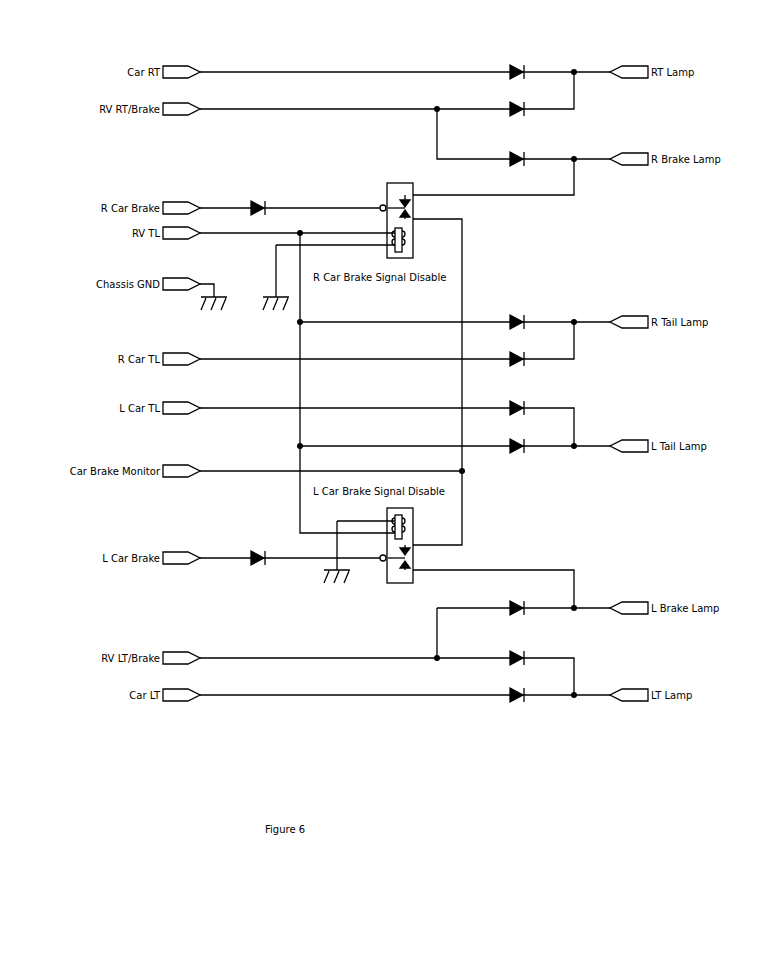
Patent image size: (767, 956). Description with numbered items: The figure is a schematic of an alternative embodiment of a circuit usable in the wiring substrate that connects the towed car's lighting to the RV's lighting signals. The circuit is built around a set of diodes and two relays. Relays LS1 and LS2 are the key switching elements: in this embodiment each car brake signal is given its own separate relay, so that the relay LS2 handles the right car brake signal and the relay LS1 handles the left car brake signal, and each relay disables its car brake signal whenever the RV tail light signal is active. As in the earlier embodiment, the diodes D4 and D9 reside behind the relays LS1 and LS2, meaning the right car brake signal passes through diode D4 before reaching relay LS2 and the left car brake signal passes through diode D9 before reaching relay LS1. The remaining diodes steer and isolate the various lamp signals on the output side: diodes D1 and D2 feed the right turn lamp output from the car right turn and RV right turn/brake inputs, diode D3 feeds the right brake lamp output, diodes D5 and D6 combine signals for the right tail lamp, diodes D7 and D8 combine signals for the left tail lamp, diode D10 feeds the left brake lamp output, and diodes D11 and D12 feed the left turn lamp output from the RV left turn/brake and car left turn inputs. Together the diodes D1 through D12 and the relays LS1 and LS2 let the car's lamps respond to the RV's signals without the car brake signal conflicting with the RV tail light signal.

The diode D1 is at (518, 64).
The diode D2 is at (518, 101).
The diode D3 is at (518, 151).
The diode D4 is at (258, 200).
The diode D5 is at (518, 314).
The diode D6 is at (518, 351).
The diode D7 is at (518, 400).
The diode D8 is at (518, 438).
The diode D9 is at (258, 550).
The diode D10 is at (520, 600).
The diode D11 is at (520, 650).
The diode D12 is at (520, 687).
The relay LS1 is at (394, 552).
The relay LS2 is at (394, 215).